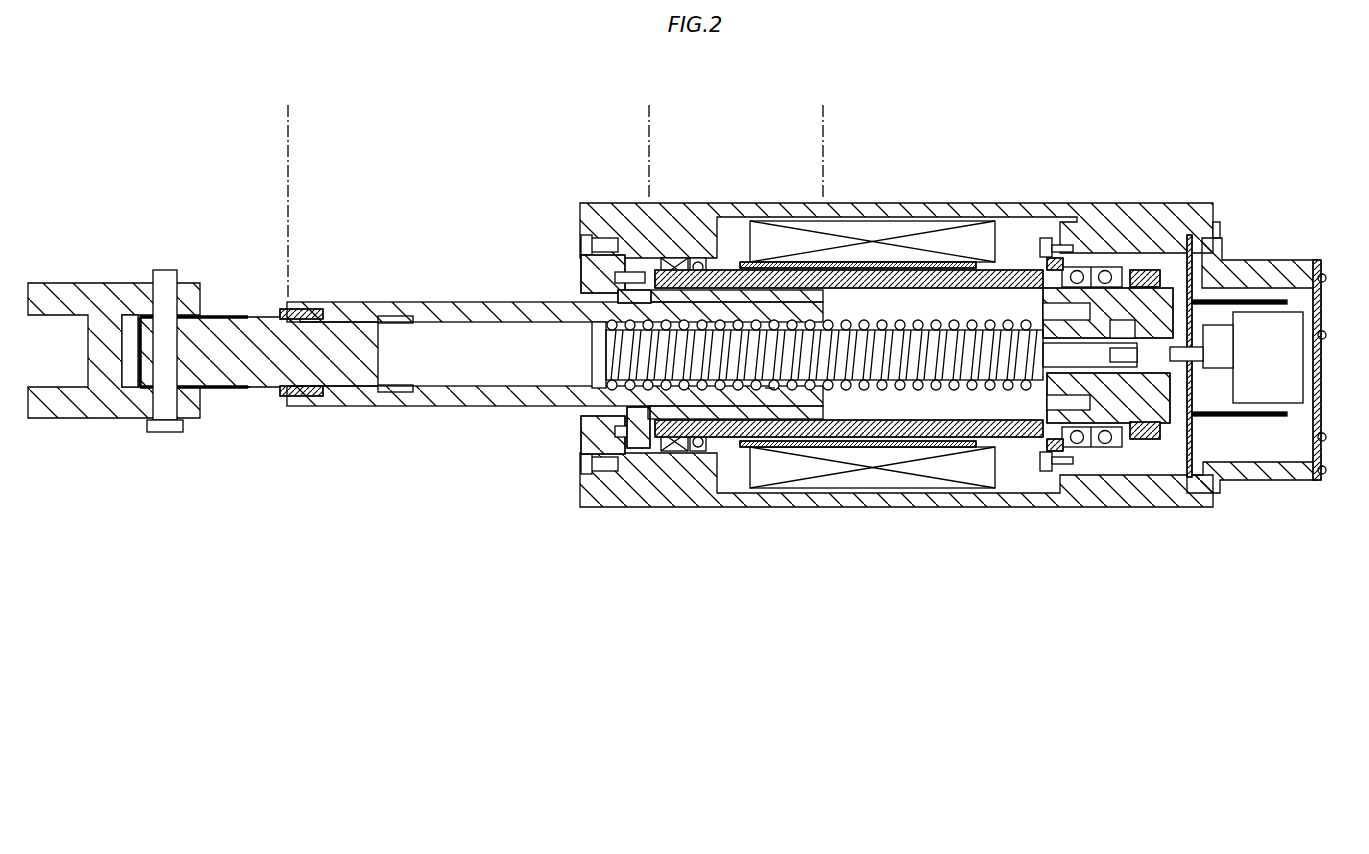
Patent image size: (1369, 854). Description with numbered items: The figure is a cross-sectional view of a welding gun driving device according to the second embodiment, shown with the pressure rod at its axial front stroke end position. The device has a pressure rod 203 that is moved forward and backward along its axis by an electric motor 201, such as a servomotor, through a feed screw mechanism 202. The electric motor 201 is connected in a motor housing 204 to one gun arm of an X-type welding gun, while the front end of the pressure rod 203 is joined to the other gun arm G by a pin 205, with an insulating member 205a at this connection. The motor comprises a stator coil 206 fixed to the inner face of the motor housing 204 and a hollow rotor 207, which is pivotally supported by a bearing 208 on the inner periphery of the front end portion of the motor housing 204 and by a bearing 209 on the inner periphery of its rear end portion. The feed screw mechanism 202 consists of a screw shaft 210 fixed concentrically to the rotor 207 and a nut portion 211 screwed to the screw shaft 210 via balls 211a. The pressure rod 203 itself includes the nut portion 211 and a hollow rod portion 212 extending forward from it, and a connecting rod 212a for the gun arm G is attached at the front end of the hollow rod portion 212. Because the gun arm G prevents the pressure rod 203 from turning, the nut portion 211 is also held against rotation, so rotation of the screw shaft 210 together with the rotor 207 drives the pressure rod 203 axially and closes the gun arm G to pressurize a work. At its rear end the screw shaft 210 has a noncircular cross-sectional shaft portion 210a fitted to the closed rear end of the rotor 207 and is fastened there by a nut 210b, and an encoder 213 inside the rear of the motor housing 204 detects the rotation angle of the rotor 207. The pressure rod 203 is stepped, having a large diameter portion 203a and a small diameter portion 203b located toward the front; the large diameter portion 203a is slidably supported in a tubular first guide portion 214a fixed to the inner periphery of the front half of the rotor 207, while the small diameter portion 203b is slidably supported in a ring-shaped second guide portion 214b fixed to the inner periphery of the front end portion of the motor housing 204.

The gun arm G is at (88, 283).
The electric motor 201 is at (913, 203).
The feed screw mechanism 202 is at (838, 393).
The pressure rod 203 is at (445, 303).
The large diameter portion 203a is at (650, 135).
The small diameter portion 203b is at (648, 135).
The motor housing 204 is at (986, 221).
The pin 205 is at (165, 270).
The insulating member 205a is at (206, 388).
The stator coil 206 is at (1015, 262).
The rotor 207 is at (1046, 238).
The bearing 208 is at (690, 257).
The bearing 209 is at (1105, 267).
The screw shaft 210 is at (927, 329).
The noncircular cross-sectional shaft portion 210a is at (1120, 371).
The nut 210b is at (1120, 331).
The nut portion 211 is at (795, 412).
The balls 211a is at (770, 390).
The hollow rod portion 212 is at (495, 407).
The connecting rod 212a is at (247, 366).
The encoder 213 is at (1300, 320).
The first guide portion 214a is at (723, 422).
The second guide portion 214b is at (622, 410).